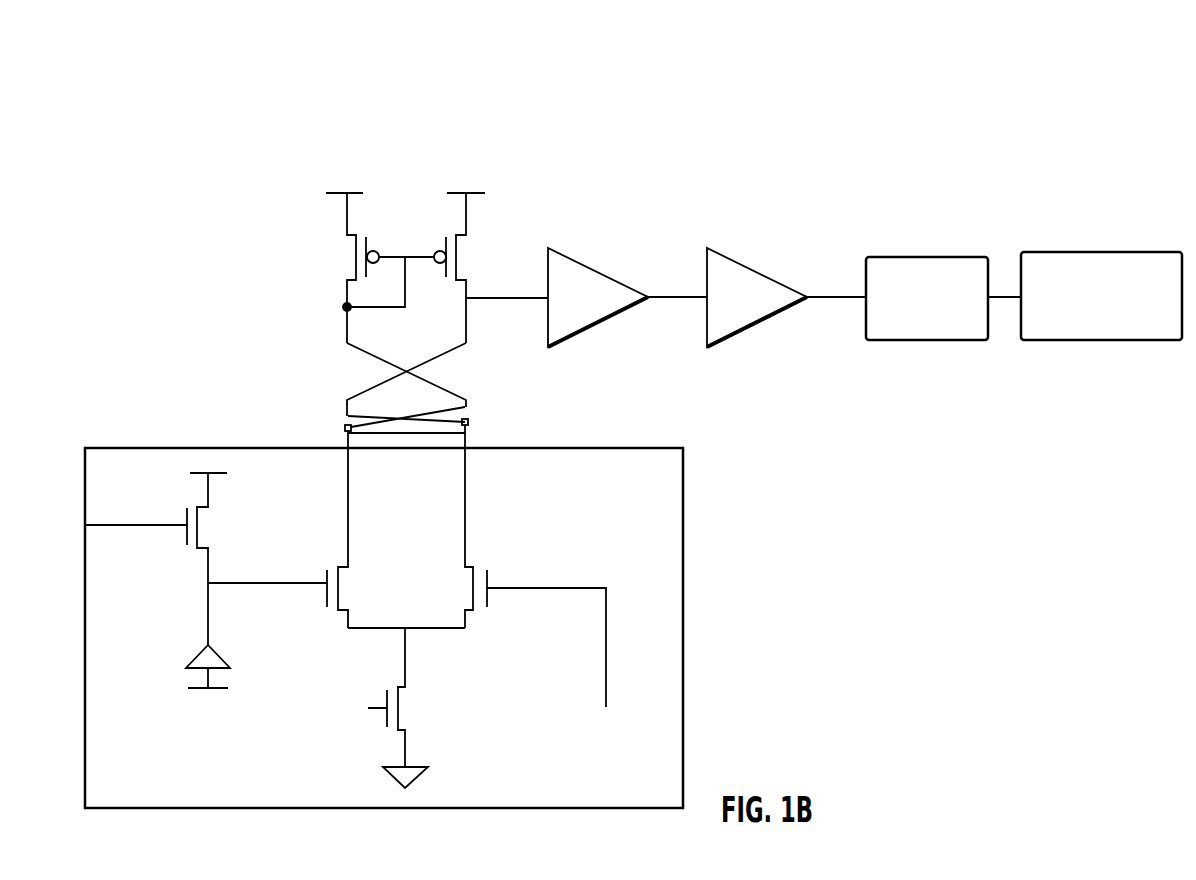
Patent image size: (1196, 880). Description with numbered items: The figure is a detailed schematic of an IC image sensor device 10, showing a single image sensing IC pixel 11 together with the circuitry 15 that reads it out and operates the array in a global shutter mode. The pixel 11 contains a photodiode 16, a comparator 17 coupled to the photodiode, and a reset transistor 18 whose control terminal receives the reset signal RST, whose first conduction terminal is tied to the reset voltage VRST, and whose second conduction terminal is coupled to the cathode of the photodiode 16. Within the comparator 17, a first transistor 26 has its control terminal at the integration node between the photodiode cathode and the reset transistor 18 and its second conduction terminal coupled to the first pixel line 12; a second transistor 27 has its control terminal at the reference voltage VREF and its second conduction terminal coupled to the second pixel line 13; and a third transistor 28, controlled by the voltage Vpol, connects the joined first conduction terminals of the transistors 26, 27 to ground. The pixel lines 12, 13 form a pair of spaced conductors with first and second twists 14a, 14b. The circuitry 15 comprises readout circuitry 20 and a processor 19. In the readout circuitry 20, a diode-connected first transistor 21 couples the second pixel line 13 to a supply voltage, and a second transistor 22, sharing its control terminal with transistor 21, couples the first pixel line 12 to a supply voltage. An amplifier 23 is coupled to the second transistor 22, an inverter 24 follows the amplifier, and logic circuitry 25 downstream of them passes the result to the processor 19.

The IC image sensor device 10 is at (1078, 110).
The image sensing IC pixel 11 is at (163, 440).
The first pixel line 12 is at (342, 430).
The second pixel line 13 is at (470, 429).
The first twist 14a is at (408, 419).
The second twist 14b is at (365, 362).
The circuitry 15 is at (690, 168).
The photodiode 16 is at (190, 660).
The comparator 17 is at (546, 498).
The reset transistor 18 is at (199, 556).
The processor 19 is at (1097, 340).
The readout circuitry 20 is at (576, 198).
The first transistor 21 is at (356, 262).
The second transistor 22 is at (465, 253).
The amplifier 23 is at (600, 268).
The inverter 24 is at (748, 268).
The logic circuitry 25 is at (925, 257).
The first transistor 26 is at (328, 603).
The second transistor 27 is at (488, 578).
The third transistor 28 is at (387, 727).